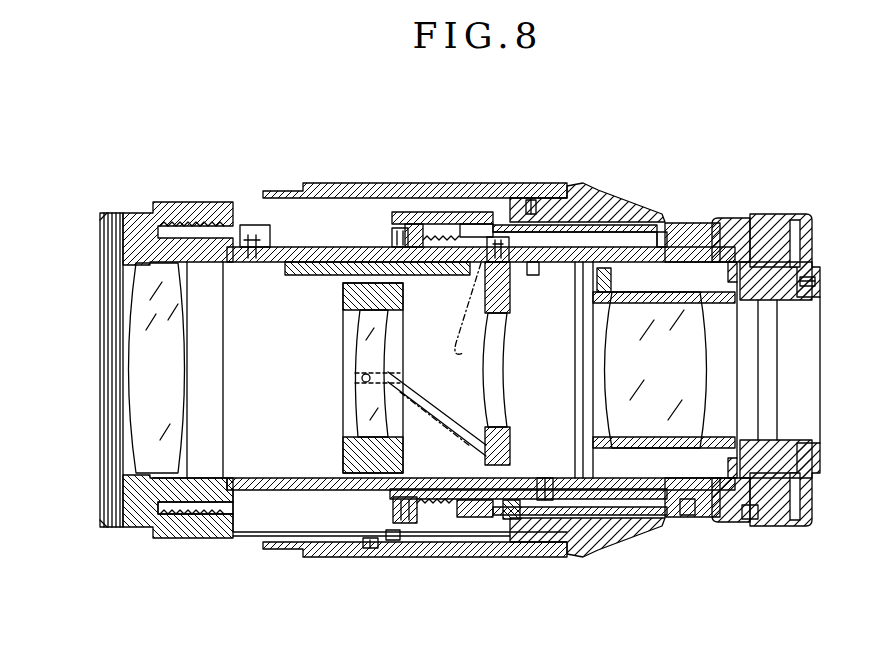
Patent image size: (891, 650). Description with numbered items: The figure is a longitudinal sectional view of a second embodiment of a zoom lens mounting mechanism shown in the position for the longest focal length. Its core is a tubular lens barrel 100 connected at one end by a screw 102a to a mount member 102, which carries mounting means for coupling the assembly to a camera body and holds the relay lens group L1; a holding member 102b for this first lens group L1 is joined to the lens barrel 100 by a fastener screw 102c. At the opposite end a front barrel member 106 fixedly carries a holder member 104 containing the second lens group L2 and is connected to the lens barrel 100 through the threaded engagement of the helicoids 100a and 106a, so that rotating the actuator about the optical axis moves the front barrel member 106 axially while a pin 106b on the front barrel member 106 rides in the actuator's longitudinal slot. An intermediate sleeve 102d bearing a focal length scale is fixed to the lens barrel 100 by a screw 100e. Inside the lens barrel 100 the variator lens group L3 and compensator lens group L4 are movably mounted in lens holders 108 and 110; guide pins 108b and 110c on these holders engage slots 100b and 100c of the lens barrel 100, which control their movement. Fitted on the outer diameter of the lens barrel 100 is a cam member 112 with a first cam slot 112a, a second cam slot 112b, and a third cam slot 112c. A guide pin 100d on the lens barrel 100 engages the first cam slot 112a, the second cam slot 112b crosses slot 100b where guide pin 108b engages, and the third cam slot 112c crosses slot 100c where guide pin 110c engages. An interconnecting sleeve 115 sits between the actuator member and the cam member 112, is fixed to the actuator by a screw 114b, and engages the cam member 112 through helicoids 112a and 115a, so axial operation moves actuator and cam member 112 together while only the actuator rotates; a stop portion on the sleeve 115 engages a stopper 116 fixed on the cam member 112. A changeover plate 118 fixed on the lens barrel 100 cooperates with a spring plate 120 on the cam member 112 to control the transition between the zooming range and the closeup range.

The lens barrel 100 is at (690, 225).
The helicoid 100a is at (229, 477).
The slot 100b is at (433, 382).
The slot 100c is at (466, 320).
The guide pin 100d is at (536, 266).
The screw 100e is at (688, 517).
The mount member 102 is at (808, 258).
The screw 102a is at (817, 283).
The holding member 102b is at (723, 303).
The fastener screw 102c is at (752, 514).
The intermediate sleeve 102d is at (708, 223).
The holder member 104 is at (130, 248).
The front barrel member 106 is at (142, 527).
The helicoid 106a is at (197, 516).
The pin 106b is at (367, 548).
The lens holder 108 is at (388, 447).
The guide pin 108b is at (511, 520).
The lens holder 110 is at (313, 276).
The guide pin 110c is at (481, 268).
The cam member 112 is at (437, 222).
The first cam slot 112a is at (649, 226).
The second cam slot 112b is at (542, 512).
The third cam slot 112c is at (494, 212).
The screw 114b is at (538, 184).
The interconnecting sleeve 115 is at (580, 206).
The helicoid 115a is at (393, 540).
The stopper 116 is at (408, 527).
The changeover plate 118 is at (248, 228).
The spring plate 120 is at (390, 236).
The relay lens group L1 is at (610, 350).
The second lens group L2 is at (138, 422).
The variator lens group L3 is at (366, 410).
The compensator lens group L4 is at (504, 418).